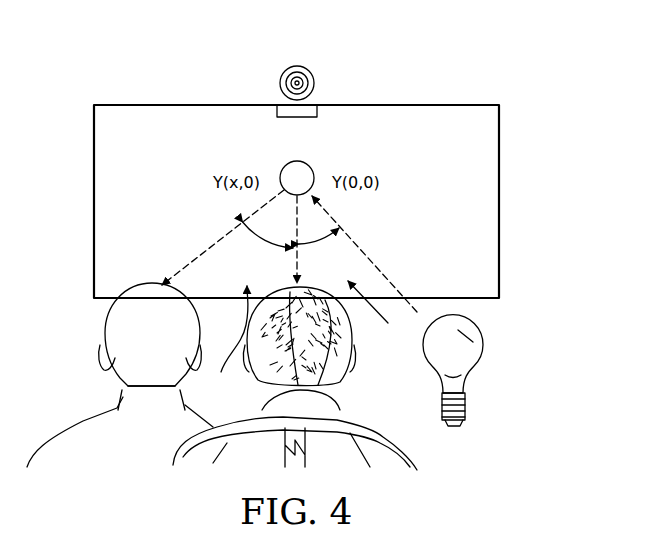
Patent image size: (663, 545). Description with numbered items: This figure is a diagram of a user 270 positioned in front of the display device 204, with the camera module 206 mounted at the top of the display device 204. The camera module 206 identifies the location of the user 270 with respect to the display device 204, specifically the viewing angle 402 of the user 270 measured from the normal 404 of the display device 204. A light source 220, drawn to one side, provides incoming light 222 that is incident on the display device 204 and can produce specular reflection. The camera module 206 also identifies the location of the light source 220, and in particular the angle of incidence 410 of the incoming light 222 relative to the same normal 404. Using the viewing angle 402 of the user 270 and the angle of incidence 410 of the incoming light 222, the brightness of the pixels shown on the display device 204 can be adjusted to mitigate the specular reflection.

The display device 204 is at (91, 204).
The camera module 206 is at (296, 63).
The light source 220 is at (485, 348).
The incoming light 222 is at (393, 282).
The user 270 is at (70, 427).
The viewing angle 402 is at (222, 346).
The normal 404 is at (297, 232).
The angle of incidence 410 is at (379, 316).